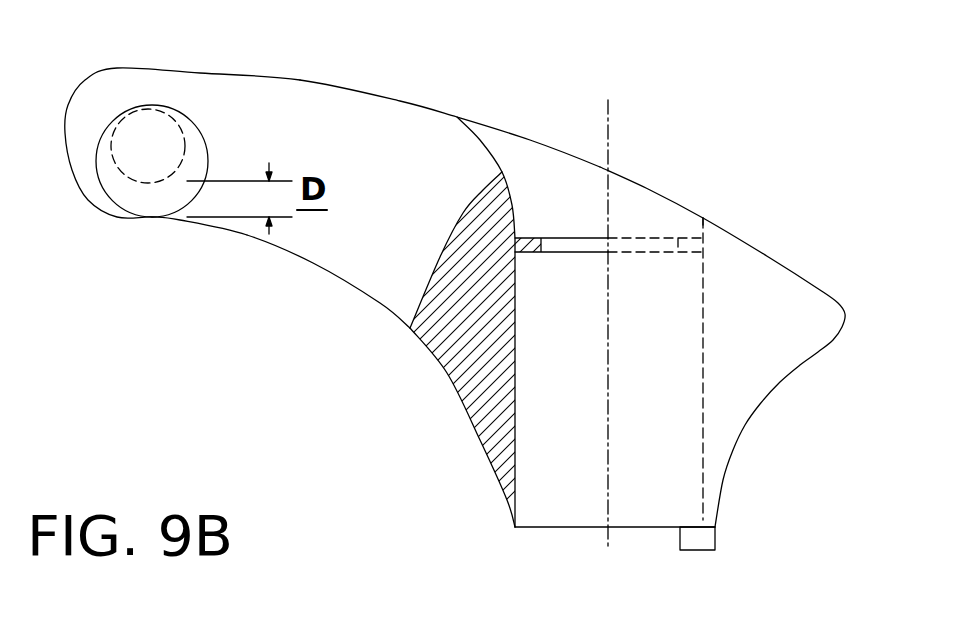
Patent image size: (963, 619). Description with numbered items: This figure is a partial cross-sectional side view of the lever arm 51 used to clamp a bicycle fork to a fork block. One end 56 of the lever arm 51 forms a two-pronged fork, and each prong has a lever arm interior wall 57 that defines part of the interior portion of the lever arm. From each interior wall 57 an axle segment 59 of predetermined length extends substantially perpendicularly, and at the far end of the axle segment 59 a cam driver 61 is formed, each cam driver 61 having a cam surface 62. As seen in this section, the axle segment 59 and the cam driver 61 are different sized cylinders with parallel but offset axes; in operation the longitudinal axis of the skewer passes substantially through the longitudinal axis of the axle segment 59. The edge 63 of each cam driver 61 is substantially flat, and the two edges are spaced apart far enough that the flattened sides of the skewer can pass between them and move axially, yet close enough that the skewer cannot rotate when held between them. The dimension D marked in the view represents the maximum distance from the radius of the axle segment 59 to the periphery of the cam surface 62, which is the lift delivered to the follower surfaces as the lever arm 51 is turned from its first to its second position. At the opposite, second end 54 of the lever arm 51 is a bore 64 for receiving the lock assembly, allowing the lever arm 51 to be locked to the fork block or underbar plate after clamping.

The lever arm 51 is at (297, 322).
The second end of the lever arm 54 is at (787, 285).
The another end of the lever arm 56 is at (105, 100).
The lever arm interior wall 57 is at (387, 138).
The axle segment 59 is at (115, 158).
The cam driver 61 is at (117, 190).
The cam surface 62 is at (118, 196).
The edge of the cam driver 63 is at (193, 147).
The bore 64 is at (647, 453).